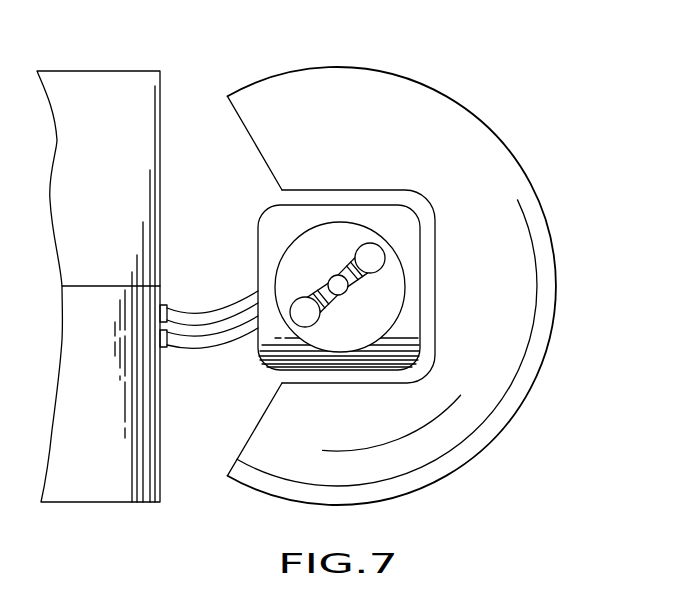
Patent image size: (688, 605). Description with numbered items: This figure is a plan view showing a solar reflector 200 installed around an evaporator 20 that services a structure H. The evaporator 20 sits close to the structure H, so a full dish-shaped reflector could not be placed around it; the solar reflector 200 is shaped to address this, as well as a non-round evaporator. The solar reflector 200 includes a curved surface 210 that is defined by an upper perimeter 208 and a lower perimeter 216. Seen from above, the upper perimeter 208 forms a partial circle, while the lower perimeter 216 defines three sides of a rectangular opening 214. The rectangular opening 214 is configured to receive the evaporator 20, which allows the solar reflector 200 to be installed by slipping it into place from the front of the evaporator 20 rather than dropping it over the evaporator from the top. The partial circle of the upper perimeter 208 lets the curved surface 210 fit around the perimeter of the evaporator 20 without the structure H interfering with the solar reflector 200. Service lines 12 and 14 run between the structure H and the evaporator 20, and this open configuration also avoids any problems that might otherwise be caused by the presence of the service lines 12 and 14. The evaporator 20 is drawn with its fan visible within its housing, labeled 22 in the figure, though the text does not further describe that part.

The structure H is at (118, 70).
The service line 12 is at (222, 314).
The service line 14 is at (212, 348).
The evaporator 20 is at (332, 246).
The fan blade 22 is at (371, 274).
The solar reflector 200 is at (430, 286).
The upper perimeter 208 is at (531, 388).
The curved surface 210 is at (523, 259).
The rectangular opening 214 is at (280, 197).
The lower perimeter 216 is at (322, 188).